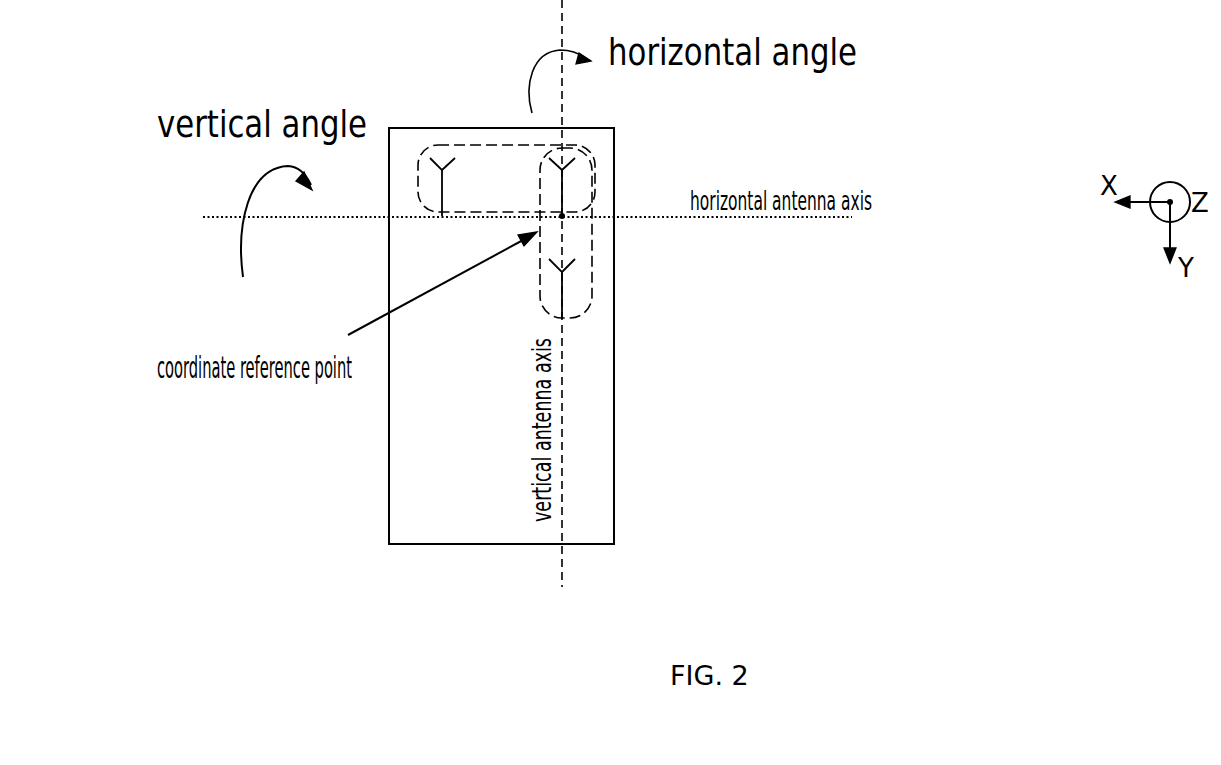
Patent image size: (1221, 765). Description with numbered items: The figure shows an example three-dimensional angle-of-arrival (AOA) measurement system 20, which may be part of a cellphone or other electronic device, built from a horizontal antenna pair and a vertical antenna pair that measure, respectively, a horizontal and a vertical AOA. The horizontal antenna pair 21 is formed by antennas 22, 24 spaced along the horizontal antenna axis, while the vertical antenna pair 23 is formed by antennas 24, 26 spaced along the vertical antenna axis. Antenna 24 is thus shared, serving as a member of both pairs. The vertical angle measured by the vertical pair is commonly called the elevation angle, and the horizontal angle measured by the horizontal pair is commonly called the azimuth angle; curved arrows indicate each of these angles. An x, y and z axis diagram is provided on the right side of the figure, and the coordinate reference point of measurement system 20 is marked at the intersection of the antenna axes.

The AOA measurement system 20 is at (490, 545).
The horizontal antenna pair 21 is at (487, 143).
The antenna 22 is at (443, 185).
The vertical antenna pair 23 is at (592, 228).
The antenna 24 is at (562, 188).
The antenna 26 is at (562, 292).